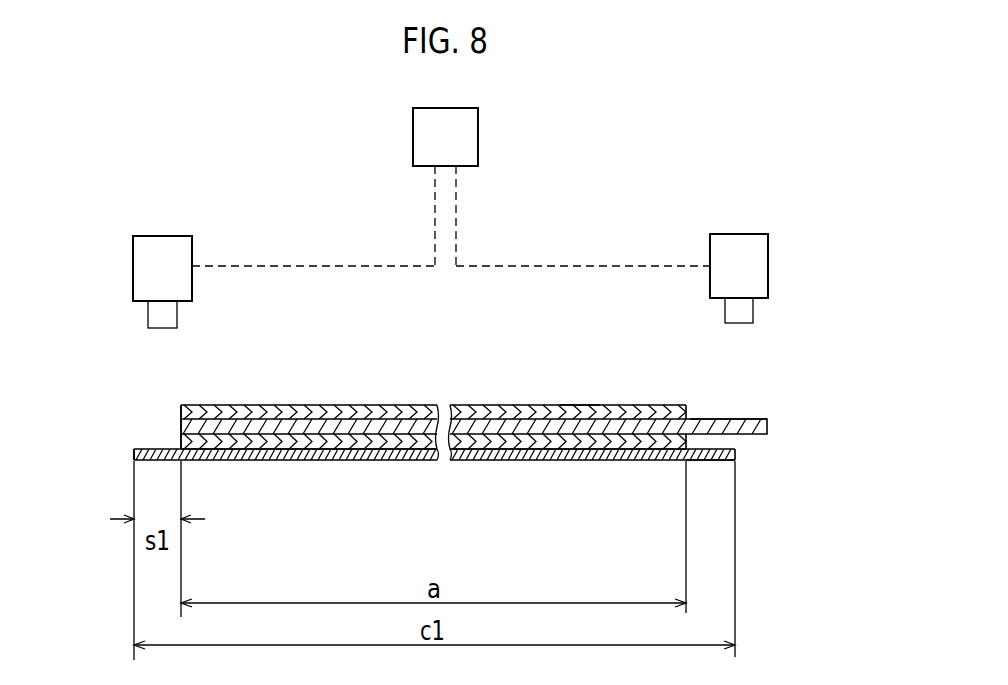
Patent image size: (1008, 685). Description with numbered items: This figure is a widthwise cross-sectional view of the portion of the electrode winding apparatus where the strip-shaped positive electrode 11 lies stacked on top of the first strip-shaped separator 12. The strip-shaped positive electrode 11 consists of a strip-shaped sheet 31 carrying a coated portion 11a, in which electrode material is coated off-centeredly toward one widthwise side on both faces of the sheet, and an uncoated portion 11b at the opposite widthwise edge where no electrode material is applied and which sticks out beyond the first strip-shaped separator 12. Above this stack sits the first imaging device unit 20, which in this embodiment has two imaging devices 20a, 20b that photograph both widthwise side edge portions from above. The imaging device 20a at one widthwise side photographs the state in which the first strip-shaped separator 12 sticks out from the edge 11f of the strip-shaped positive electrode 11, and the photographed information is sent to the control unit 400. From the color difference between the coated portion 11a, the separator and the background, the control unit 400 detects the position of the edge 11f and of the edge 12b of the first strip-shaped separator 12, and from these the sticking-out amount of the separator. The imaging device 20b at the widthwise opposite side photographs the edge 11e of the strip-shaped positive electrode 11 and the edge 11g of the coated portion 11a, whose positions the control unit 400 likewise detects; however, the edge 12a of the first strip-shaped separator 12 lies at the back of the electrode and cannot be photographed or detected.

The control unit 400 is at (413, 133).
The first imaging device unit 20 is at (742, 189).
The imaging device 20a is at (133, 267).
The imaging device 20b is at (768, 267).
The strip-shaped positive electrode 11 is at (392, 390).
The strip-shaped sheet 31 is at (316, 420).
The coated portion 11a is at (595, 417).
The uncoated portion 11b is at (760, 417).
The edge of the strip-shaped positive electrode 11e is at (768, 424).
The edge of the strip-shaped positive electrode 11f is at (181, 443).
The edge of the coated portion 11g is at (686, 408).
The first strip-shaped separator 12 is at (260, 461).
The edge of the first strip-shaped separator 12a is at (737, 456).
The edge of the first strip-shaped separator 12b is at (133, 452).